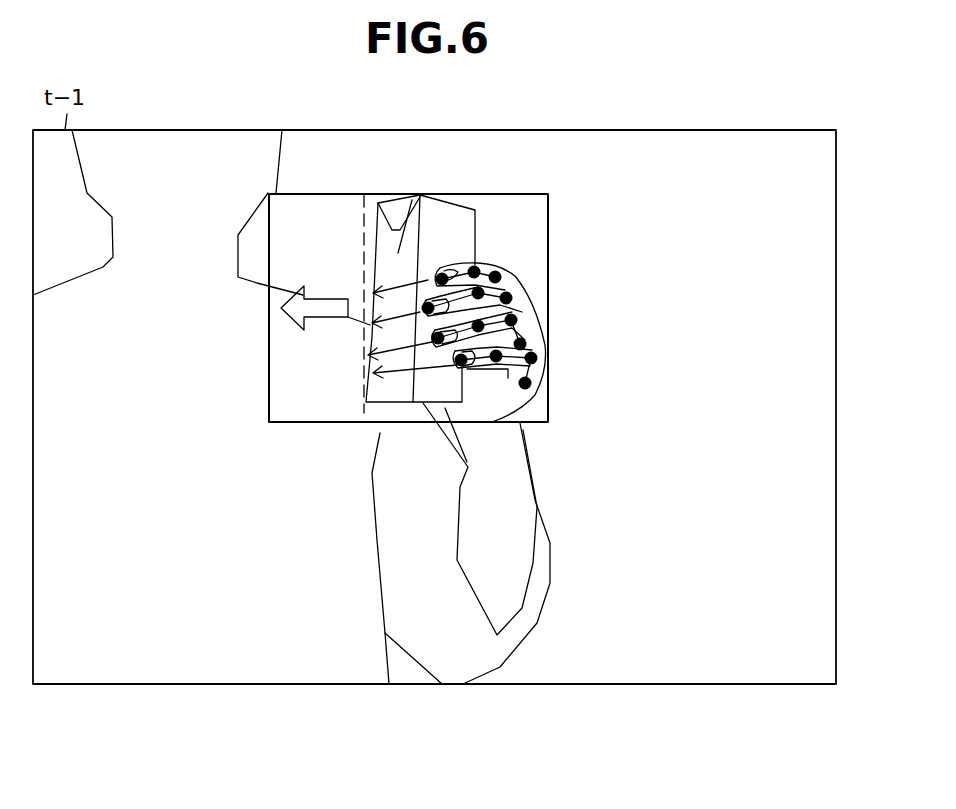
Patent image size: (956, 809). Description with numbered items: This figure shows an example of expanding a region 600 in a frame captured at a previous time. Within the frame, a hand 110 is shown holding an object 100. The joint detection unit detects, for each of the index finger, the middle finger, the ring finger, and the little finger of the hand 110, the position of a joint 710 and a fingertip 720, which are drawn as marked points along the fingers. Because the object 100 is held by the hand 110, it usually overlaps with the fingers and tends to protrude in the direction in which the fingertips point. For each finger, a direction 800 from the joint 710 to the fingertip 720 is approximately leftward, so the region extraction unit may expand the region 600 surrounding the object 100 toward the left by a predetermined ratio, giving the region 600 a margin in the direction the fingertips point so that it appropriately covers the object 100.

The object 100 is at (400, 230).
The hand 110 is at (482, 393).
The region 600 is at (350, 194).
The joint 710 is at (478, 266).
The fingertip 720 is at (445, 268).
The direction 800 is at (383, 215).